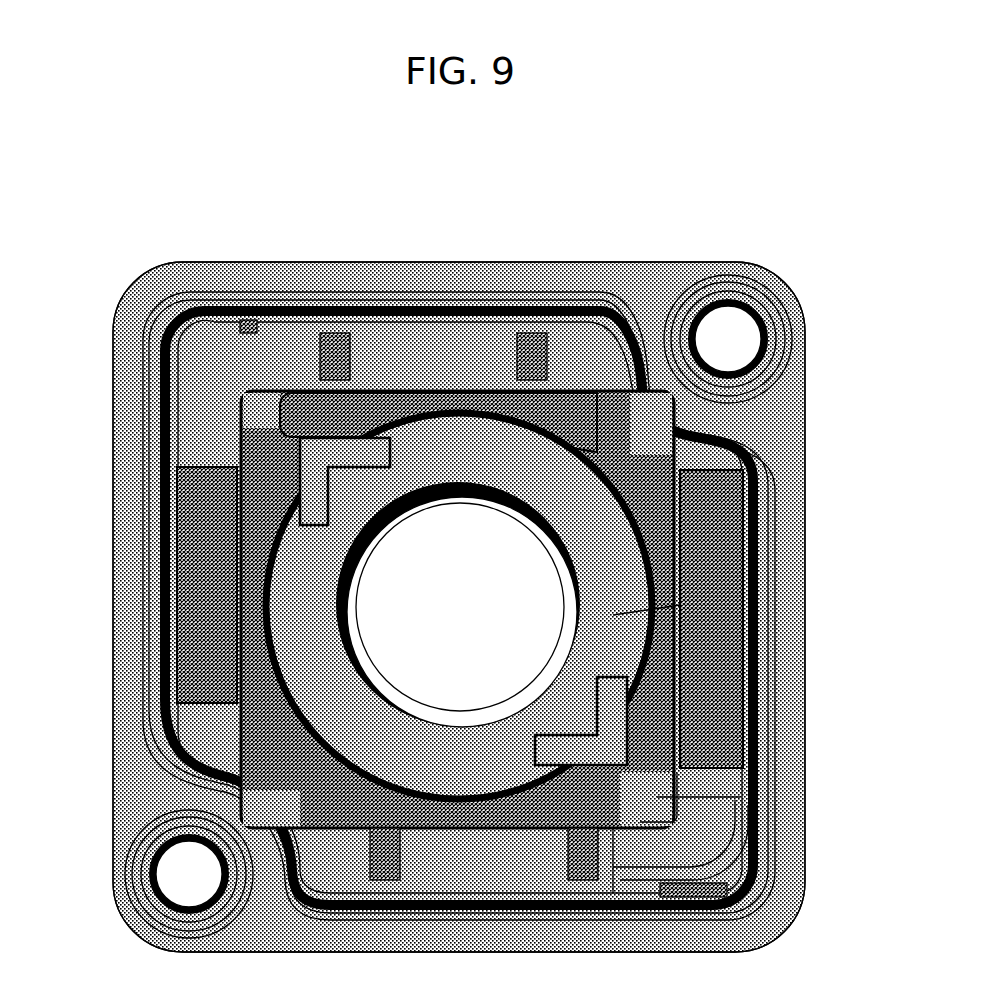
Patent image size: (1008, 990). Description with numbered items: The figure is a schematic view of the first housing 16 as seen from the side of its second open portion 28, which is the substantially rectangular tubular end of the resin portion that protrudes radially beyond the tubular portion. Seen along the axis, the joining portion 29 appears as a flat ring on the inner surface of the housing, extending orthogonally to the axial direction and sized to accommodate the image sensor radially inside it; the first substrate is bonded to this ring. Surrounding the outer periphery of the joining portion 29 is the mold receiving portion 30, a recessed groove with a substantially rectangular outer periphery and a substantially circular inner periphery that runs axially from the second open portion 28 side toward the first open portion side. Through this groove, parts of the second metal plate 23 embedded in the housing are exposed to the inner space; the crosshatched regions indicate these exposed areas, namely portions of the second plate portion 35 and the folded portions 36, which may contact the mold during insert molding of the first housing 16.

The first housing 16 is at (538, 229).
The second metal plate 23 is at (712, 552).
The second open portion 28 is at (130, 762).
The joining portion 29 is at (770, 635).
The mold receiving portion 30 is at (653, 802).
The second plate portion 35 is at (320, 438).
The folded portion 36 is at (177, 568).